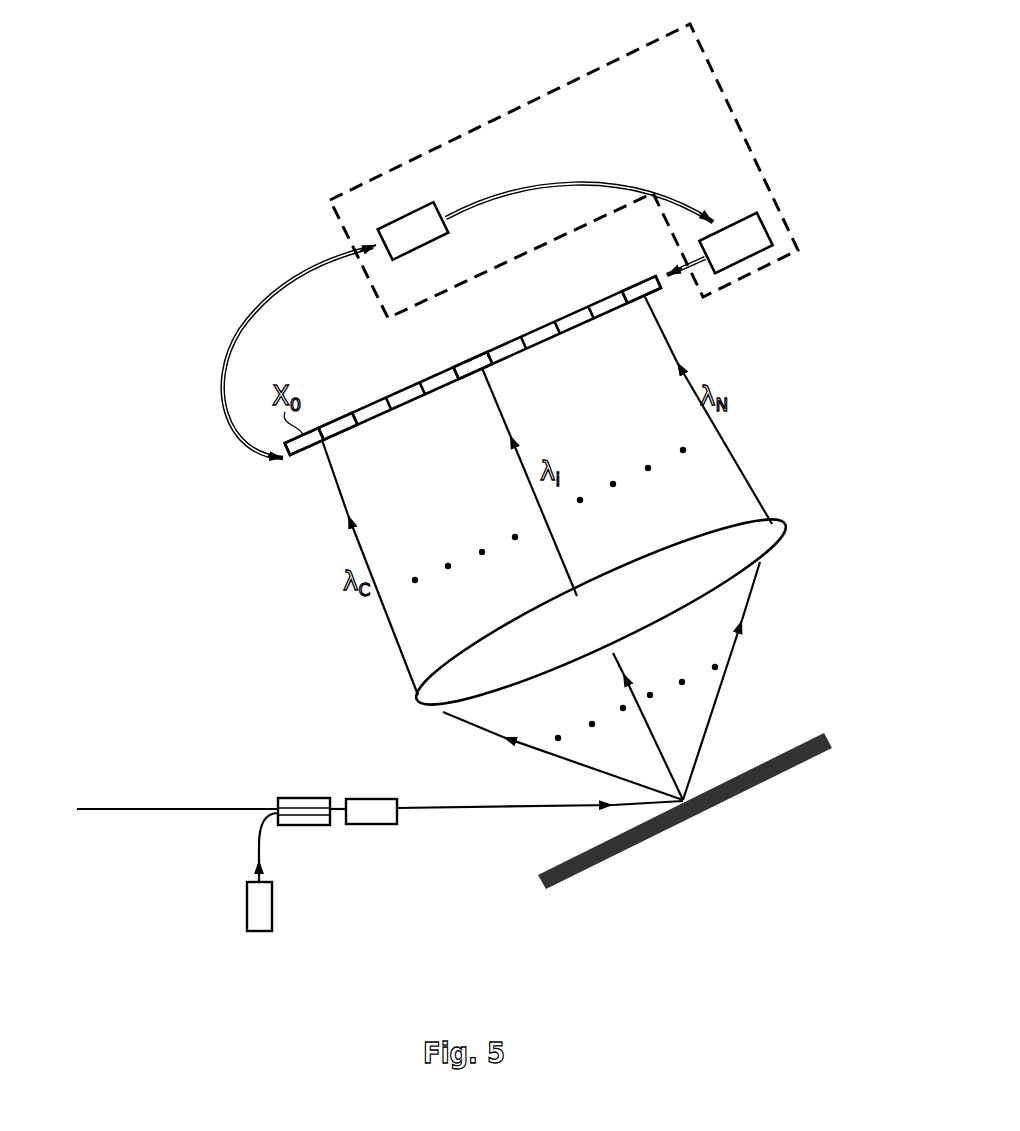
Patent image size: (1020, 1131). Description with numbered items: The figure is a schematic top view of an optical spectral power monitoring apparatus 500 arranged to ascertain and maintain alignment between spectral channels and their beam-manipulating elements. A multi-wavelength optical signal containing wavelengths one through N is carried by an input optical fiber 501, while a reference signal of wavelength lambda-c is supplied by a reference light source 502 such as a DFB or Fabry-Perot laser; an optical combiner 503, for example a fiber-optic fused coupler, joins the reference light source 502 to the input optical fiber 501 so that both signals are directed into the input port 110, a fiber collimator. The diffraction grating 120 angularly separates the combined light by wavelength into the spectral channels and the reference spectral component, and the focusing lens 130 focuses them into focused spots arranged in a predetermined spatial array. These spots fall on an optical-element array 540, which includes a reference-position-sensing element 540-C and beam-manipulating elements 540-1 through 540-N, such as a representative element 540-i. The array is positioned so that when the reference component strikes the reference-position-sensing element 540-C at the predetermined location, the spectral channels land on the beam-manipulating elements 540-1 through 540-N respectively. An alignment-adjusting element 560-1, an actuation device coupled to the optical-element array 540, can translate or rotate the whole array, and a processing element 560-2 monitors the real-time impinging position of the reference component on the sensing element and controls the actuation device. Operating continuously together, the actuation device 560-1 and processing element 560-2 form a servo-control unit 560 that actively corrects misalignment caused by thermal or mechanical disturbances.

The optical spectral power monitoring apparatus 500 is at (170, 150).
The servo-control unit 560 is at (719, 78).
The alignment-adjusting element 560-1 is at (730, 218).
The processing element 560-2 is at (428, 200).
The optical-element array 540 is at (600, 286).
The reference-position-sensing element 540-C is at (313, 431).
The beam-manipulating element 540-1 is at (350, 445).
The beam-manipulating element 540-i is at (471, 357).
The beam-manipulating element 540-N is at (641, 300).
The focusing lens 130 is at (765, 520).
The diffraction grating 120 is at (795, 778).
The input port 110 is at (378, 799).
The input optical fiber 501 is at (135, 808).
The reference light source 502 is at (260, 931).
The optical combiner 503 is at (305, 798).